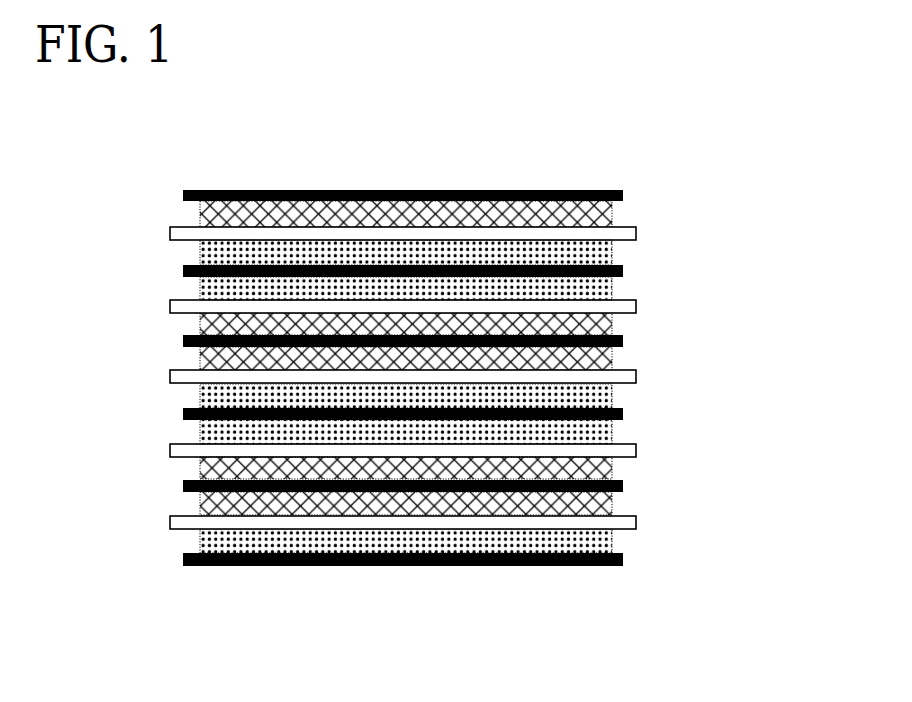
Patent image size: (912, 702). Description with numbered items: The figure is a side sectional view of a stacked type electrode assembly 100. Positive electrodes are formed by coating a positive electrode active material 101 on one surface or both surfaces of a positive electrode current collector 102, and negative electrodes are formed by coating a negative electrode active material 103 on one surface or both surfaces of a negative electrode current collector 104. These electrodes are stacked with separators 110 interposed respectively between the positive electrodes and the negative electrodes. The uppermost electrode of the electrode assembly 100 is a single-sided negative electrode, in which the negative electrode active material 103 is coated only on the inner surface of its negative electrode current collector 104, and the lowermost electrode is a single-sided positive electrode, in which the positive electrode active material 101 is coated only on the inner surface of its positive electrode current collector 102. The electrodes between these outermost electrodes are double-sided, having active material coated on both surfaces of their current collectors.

The electrode assembly 100 is at (126, 179).
The positive electrode active material 101 is at (613, 256).
The positive electrode current collector 102 is at (623, 267).
The negative electrode active material 103 is at (613, 468).
The negative electrode current collector 104 is at (623, 193).
The separator 110 is at (635, 377).